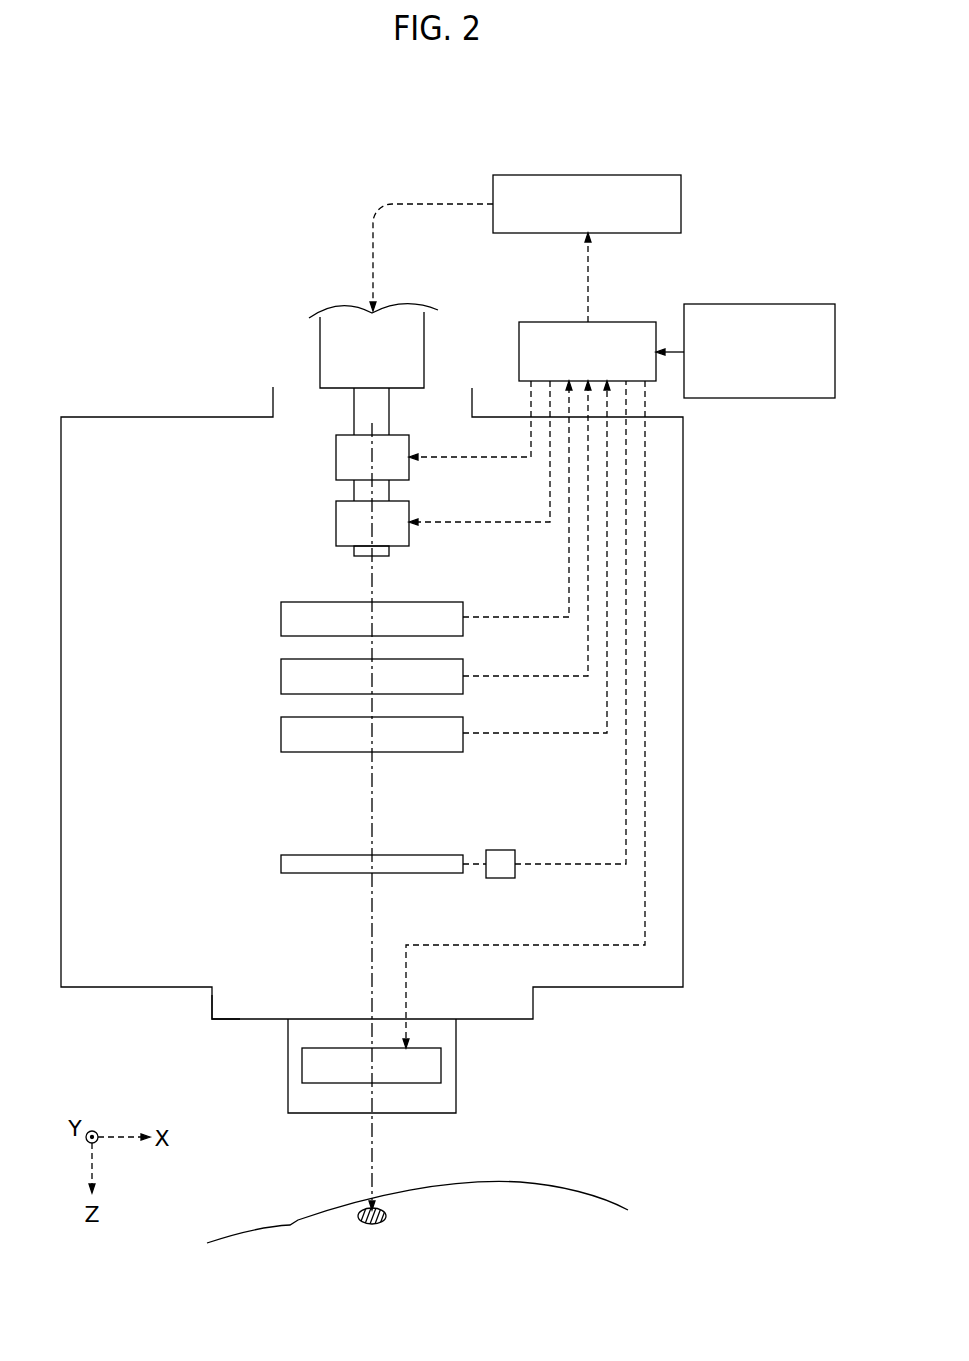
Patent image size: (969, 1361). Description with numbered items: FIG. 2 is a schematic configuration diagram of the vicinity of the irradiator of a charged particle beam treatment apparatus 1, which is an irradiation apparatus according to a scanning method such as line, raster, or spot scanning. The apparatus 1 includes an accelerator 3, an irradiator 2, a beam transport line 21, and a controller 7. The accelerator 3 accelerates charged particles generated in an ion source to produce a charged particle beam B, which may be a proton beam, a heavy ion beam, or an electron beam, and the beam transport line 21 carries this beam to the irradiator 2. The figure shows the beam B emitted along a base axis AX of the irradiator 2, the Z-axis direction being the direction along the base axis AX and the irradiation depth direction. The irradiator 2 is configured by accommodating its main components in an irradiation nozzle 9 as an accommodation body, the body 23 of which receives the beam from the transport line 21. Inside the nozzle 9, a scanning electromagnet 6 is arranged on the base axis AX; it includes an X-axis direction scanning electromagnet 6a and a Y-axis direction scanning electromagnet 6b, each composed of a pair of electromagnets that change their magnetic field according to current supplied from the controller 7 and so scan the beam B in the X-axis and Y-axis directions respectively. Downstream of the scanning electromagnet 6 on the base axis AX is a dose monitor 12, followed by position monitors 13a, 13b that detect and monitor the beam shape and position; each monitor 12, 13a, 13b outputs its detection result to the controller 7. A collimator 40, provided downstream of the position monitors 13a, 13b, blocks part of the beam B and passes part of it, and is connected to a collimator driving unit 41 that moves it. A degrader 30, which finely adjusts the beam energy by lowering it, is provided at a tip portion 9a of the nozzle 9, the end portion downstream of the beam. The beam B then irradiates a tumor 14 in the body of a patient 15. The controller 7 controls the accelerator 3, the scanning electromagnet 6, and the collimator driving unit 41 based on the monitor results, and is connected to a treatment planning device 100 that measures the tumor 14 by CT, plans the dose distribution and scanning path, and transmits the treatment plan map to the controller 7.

The charged particle beam treatment apparatus 1 is at (240, 164).
The irradiator 2 is at (170, 279).
The accelerator 3 is at (637, 175).
The treatment planning device 100 is at (803, 304).
The controller 7 is at (640, 322).
The beam transport line 21 is at (414, 200).
The irradiation nozzle 9 is at (684, 637).
The tip portion 9a is at (218, 1003).
The nozzle body 23 is at (337, 338).
The scanning electromagnet 6 is at (325, 495).
The X-axis direction scanning electromagnet 6a is at (336, 456).
The Y-axis direction scanning electromagnet 6b is at (339, 528).
The charged particle beam B is at (429, 816).
The base axis AX is at (374, 1160).
The dose monitor 12 is at (281, 617).
The position monitor 13a is at (281, 676).
The position monitor 13b is at (281, 733).
The collimator 40 is at (297, 851).
The collimator driving unit 41 is at (508, 846).
The degrader 30 is at (443, 1065).
The patient 15 is at (240, 1228).
The tumor 14 is at (387, 1212).